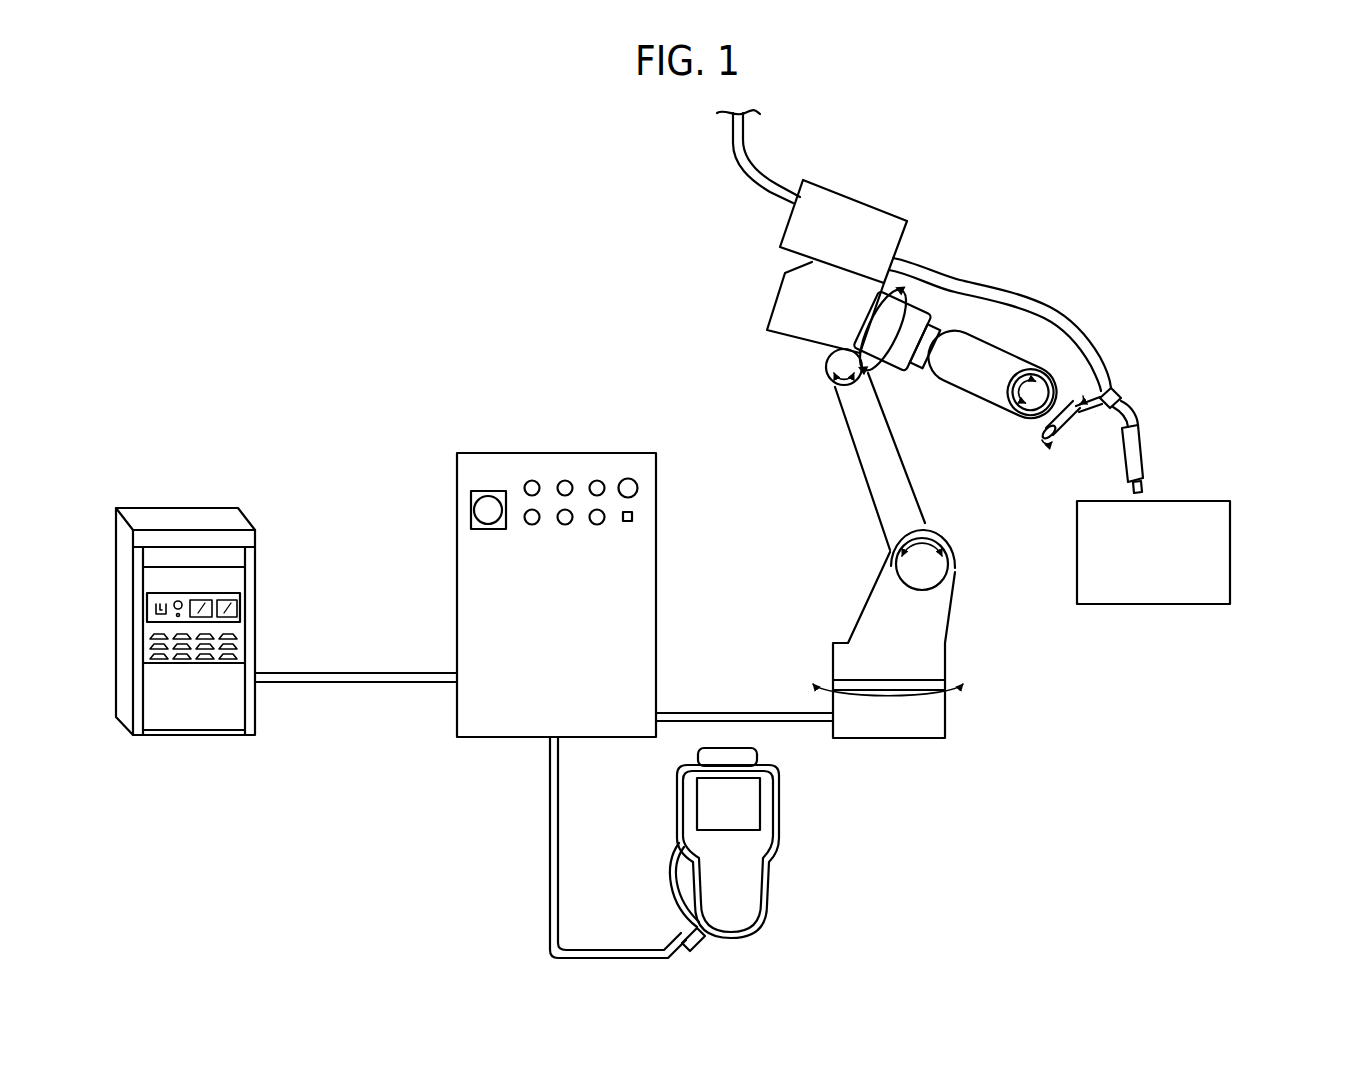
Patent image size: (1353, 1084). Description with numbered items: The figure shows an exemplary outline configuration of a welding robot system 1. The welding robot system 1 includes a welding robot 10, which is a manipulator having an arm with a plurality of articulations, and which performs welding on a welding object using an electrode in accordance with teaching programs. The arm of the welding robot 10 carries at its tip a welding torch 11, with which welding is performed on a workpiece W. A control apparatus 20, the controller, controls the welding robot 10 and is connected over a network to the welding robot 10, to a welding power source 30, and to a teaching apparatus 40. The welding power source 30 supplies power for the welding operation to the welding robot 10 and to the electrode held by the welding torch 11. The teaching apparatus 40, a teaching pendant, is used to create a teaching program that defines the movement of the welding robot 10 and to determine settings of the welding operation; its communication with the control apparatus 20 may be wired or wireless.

The welding robot system 1 is at (512, 182).
The welding robot 10 is at (778, 290).
The welding torch 11 is at (1143, 448).
The control apparatus 20 is at (562, 452).
The welding power source 30 is at (225, 508).
The teaching apparatus 40 is at (806, 824).
The workpiece W is at (1230, 548).